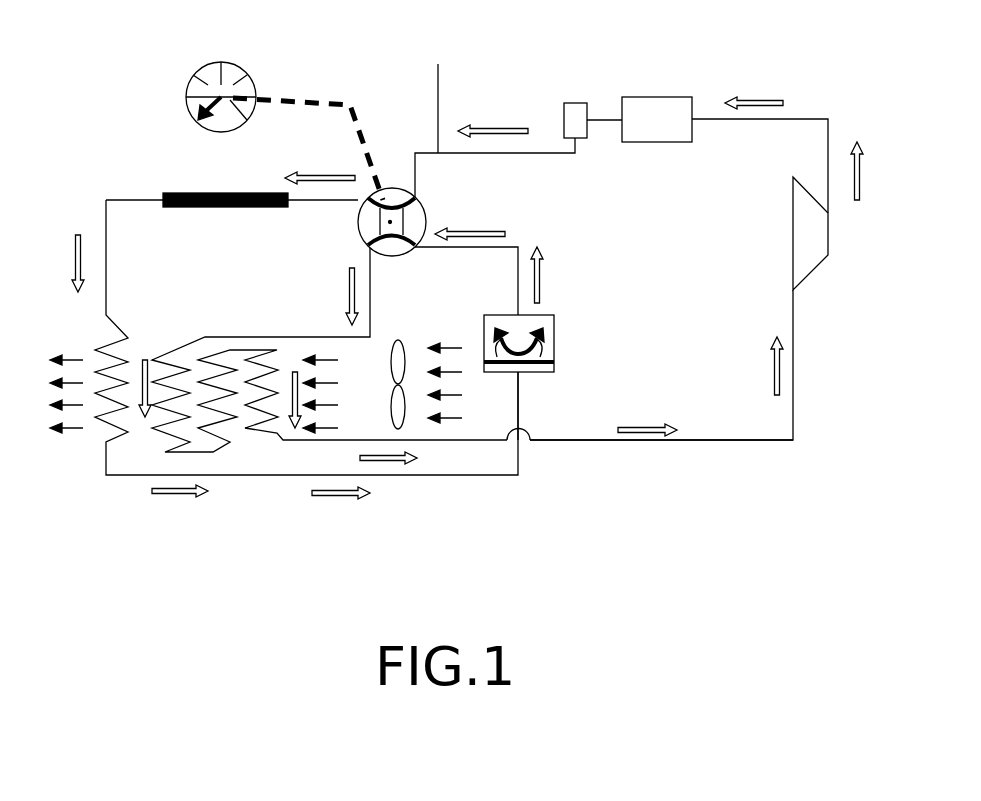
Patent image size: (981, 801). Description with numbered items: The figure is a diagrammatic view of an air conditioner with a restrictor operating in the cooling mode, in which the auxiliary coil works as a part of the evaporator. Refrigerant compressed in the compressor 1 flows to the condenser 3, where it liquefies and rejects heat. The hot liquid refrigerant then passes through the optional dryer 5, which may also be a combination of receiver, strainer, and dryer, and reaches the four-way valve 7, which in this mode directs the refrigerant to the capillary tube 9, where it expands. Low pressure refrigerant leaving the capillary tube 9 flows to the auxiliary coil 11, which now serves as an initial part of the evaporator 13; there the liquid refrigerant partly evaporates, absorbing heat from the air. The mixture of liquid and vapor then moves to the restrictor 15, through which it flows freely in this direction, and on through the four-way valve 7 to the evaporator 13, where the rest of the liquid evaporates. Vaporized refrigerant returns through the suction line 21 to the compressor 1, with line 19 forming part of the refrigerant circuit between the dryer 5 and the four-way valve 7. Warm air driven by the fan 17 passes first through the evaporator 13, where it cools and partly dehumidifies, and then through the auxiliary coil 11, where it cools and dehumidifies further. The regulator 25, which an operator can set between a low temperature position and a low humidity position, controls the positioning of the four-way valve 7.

The compressor 1 is at (817, 245).
The condenser 3 is at (657, 118).
The dryer 5 is at (578, 103).
The four-way valve 7 is at (405, 195).
The capillary tube 9 is at (218, 203).
The auxiliary coil 11 is at (107, 362).
The evaporator 13 is at (208, 383).
The restrictor 15 is at (532, 327).
The fan 17 is at (398, 340).
The refrigerant pipe 19 is at (454, 90).
The suction line 21 is at (600, 442).
The regulator 25 is at (207, 85).